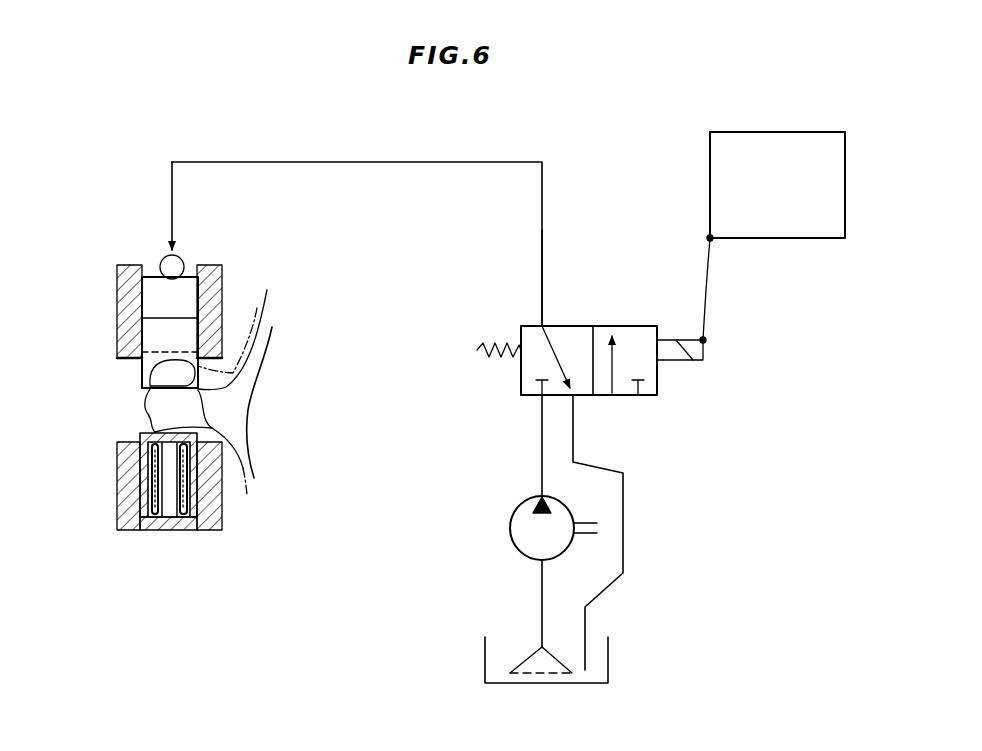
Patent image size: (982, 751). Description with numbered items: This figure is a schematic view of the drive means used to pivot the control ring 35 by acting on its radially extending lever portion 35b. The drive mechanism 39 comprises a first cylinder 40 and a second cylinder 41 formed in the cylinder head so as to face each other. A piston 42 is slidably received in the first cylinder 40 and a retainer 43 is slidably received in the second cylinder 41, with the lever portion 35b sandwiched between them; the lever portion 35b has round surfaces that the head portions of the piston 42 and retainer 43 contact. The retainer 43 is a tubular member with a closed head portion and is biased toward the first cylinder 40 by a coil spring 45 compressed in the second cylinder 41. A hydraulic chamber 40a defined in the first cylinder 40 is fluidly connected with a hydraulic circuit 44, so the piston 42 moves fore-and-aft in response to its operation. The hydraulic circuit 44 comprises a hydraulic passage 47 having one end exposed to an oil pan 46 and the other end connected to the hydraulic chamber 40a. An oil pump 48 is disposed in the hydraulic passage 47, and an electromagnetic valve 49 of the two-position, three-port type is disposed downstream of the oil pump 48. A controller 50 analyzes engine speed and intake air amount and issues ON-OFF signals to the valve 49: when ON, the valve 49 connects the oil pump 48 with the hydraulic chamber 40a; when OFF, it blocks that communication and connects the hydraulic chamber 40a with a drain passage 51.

The control ring 35 is at (245, 483).
The lever portion 35b is at (150, 414).
The drive mechanism 39 is at (122, 385).
The first cylinder 40 is at (148, 302).
The hydraulic chamber 40a is at (152, 280).
The second cylinder 41 is at (152, 497).
The piston 42 is at (180, 325).
The retainer 43 is at (140, 462).
The hydraulic circuit 44 is at (492, 159).
The coil spring 45 is at (162, 520).
The oil pan 46 is at (610, 668).
The hydraulic passage 47 is at (548, 236).
The oil pump 48 is at (510, 521).
The electromagnetic valve 49 is at (633, 326).
The controller 50 is at (777, 132).
The drain passage 51 is at (576, 406).